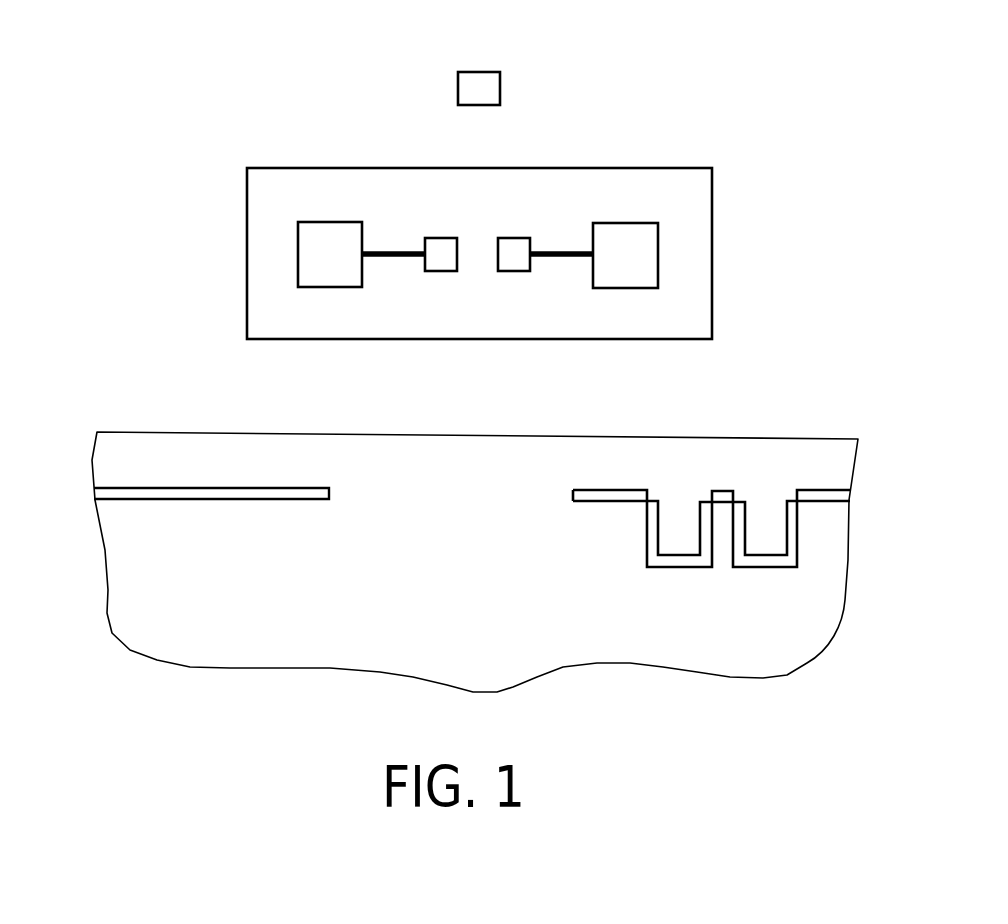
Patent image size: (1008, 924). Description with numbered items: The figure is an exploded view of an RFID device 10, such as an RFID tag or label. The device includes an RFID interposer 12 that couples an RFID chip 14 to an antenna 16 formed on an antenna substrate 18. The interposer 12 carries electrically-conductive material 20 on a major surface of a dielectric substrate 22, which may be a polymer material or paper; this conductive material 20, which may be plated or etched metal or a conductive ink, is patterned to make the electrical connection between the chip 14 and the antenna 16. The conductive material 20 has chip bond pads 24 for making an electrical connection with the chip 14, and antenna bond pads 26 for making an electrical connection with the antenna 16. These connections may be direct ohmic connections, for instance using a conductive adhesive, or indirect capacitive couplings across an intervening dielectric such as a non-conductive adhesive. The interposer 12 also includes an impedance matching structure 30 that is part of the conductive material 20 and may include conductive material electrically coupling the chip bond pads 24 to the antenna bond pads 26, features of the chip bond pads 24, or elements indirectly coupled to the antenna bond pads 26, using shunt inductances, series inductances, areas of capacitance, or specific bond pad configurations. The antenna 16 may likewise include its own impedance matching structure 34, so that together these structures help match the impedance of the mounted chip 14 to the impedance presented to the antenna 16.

The RFID device 10 is at (212, 123).
The RFID interposer 12 is at (230, 212).
The RFID chip 14 is at (500, 72).
The antenna 16 is at (120, 450).
The antenna substrate 18 is at (812, 448).
The electrically-conductive material 20 is at (645, 200).
The dielectric substrate 22 is at (698, 223).
The chip bond pads 24 is at (517, 238).
The antenna bond pads 26 is at (607, 288).
The impedance matching structure 30 is at (400, 173).
The impedance matching structure 34 is at (727, 468).